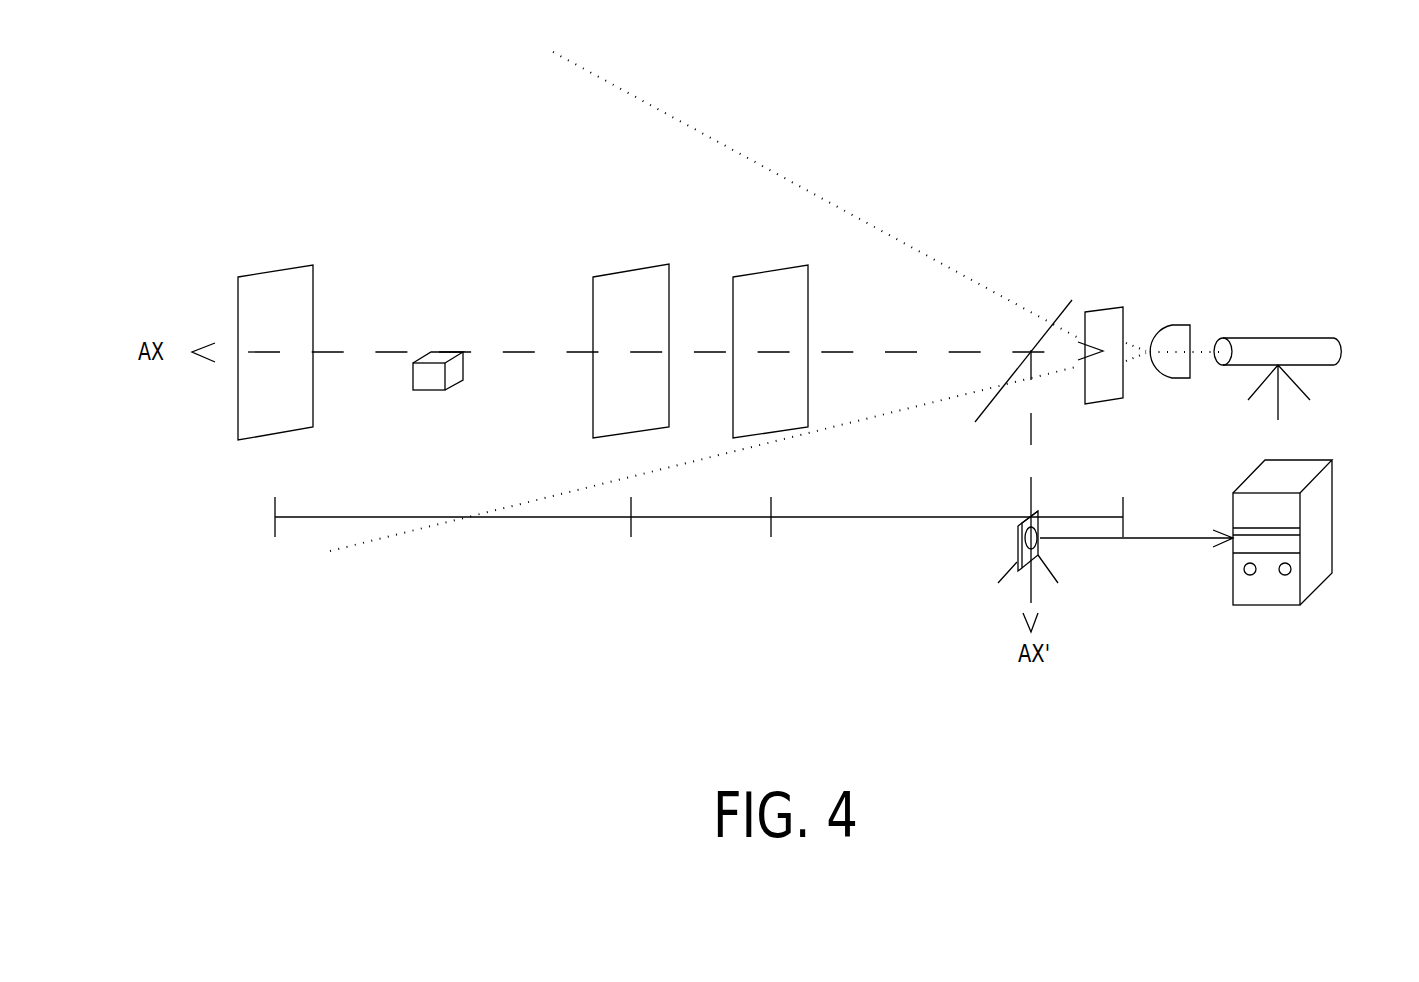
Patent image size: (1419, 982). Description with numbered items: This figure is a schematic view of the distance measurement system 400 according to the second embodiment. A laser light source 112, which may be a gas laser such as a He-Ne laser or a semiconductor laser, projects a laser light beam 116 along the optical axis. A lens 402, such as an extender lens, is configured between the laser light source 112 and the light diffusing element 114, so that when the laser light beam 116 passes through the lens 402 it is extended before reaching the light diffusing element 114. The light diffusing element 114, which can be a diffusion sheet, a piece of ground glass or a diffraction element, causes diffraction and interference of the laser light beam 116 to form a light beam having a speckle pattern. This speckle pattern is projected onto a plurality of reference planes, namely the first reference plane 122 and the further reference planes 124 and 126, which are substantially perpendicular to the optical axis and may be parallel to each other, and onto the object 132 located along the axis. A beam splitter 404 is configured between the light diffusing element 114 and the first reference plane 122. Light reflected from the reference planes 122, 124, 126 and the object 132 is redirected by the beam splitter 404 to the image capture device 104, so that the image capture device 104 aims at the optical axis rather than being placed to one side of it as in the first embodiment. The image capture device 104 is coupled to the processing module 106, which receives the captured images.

The distance measurement system 400 is at (185, 168).
The reference plane 126 is at (277, 267).
The reference plane 124 is at (632, 268).
The first reference plane 122 is at (772, 268).
The object 132 is at (427, 390).
The beam splitter 404 is at (1062, 312).
The light diffusing element 114 is at (1106, 309).
The lens 402 is at (1177, 330).
The laser light beam 116 is at (1202, 342).
The laser light source 112 is at (1302, 342).
The image capture device 104 is at (1058, 498).
The processing module 106 is at (1325, 520).